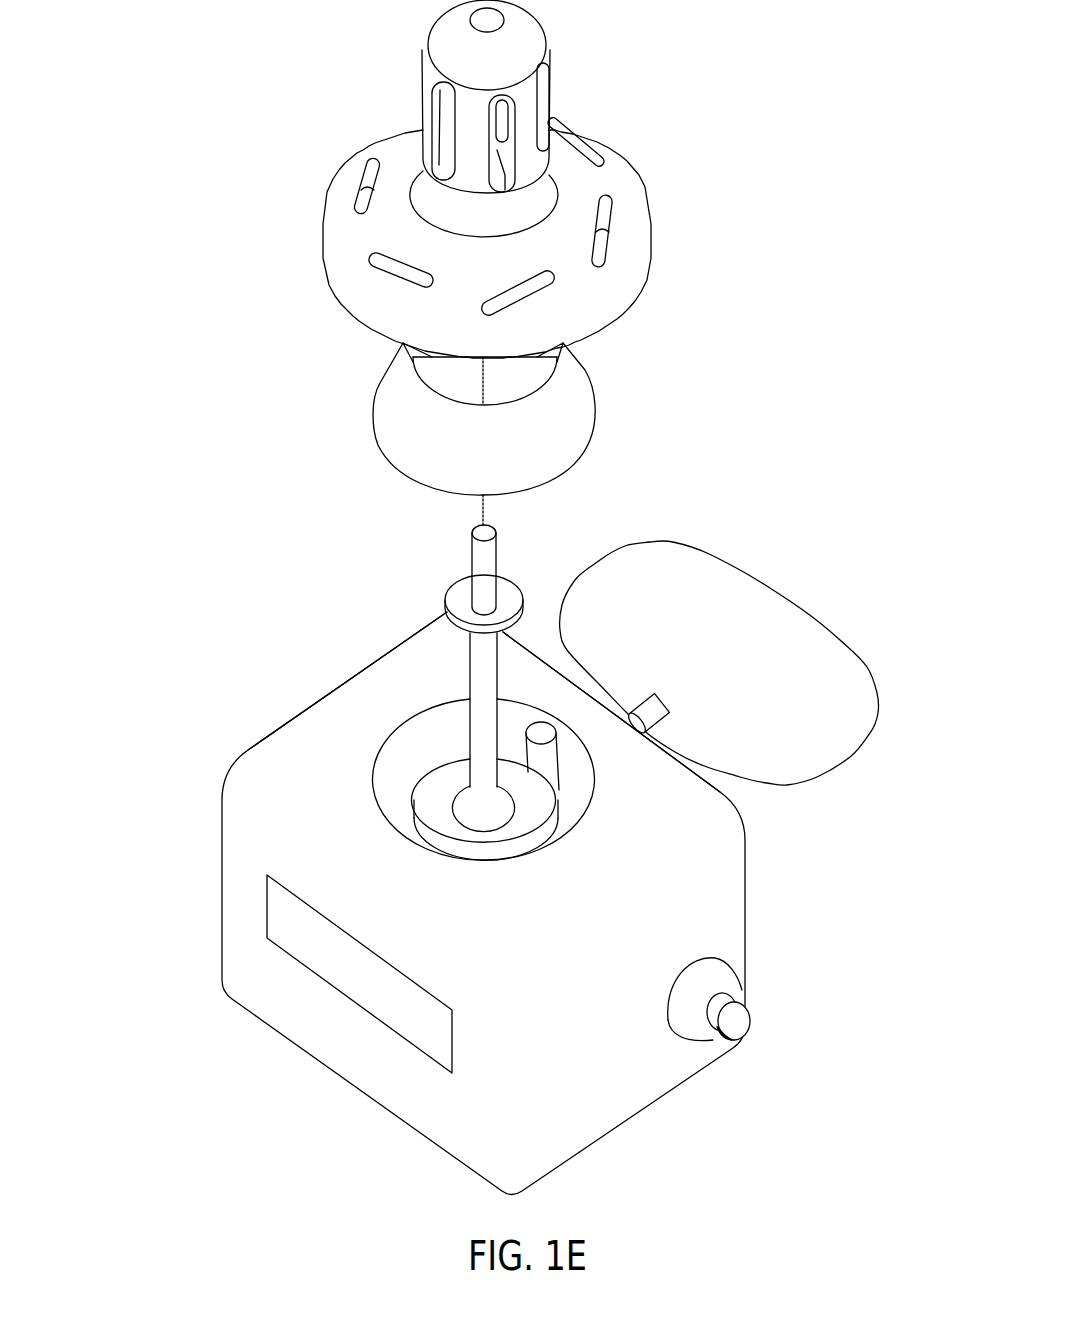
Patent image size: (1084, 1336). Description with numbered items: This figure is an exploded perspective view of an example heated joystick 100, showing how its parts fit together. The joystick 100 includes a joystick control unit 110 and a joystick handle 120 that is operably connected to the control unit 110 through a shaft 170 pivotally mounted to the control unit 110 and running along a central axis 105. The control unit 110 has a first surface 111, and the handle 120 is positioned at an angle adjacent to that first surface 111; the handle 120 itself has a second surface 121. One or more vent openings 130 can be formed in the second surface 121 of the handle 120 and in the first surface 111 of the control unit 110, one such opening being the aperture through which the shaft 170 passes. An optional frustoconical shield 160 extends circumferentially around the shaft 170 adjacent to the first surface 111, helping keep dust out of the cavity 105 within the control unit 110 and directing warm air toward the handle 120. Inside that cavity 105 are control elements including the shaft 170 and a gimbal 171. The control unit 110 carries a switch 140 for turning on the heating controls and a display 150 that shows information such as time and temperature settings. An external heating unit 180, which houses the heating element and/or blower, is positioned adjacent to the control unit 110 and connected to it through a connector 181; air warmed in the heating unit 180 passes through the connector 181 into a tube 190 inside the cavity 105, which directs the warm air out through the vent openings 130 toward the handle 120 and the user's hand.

The joystick 100 is at (186, 73).
The central axis 105 is at (487, 510).
The joystick control unit 110 is at (247, 830).
The first surface 111 is at (527, 880).
The joystick handle 120 is at (527, 105).
The second surface 121 is at (617, 178).
The vent openings 130 is at (445, 140).
The switch 140 is at (733, 1020).
The display 150 is at (377, 965).
The shield 160 is at (557, 422).
The shaft 170 is at (490, 650).
The gimbal 171 is at (456, 795).
The external heating unit 180 is at (657, 567).
The connector 181 is at (657, 703).
The tube 190 is at (545, 754).